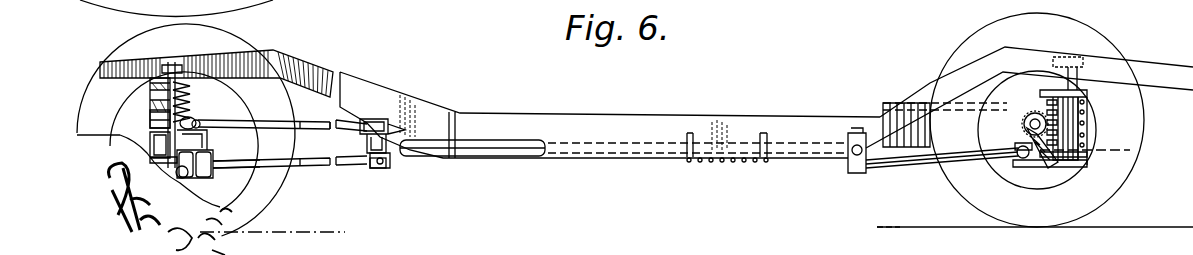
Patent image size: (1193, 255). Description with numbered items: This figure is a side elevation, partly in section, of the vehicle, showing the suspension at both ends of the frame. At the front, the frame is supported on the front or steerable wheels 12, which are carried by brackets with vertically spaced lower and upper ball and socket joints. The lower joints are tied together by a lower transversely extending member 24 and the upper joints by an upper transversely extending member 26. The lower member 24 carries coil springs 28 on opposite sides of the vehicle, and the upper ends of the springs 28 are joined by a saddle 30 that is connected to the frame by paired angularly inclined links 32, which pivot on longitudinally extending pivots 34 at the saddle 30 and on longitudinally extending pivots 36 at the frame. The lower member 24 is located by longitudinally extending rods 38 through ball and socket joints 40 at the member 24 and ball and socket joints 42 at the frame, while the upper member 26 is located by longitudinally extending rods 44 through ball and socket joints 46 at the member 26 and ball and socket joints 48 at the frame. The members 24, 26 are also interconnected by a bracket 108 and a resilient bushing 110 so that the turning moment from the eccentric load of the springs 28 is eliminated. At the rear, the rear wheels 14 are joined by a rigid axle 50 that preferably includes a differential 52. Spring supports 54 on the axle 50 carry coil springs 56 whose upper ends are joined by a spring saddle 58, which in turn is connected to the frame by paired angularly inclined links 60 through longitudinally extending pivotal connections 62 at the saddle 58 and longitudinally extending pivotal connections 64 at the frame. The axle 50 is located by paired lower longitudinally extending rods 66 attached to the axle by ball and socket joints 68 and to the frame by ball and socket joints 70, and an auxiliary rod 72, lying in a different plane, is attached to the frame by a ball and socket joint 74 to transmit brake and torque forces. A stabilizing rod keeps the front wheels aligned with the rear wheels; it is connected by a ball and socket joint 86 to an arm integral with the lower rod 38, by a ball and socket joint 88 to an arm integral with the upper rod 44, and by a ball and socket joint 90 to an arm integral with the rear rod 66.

The front or steerable wheels 12 is at (240, 47).
The rear wheels 14 is at (1080, 33).
The lower transversely extending member 24 is at (152, 143).
The upper transversely extending member 26 is at (193, 118).
The coil springs 28 is at (189, 100).
The saddle 30 is at (158, 64).
The angularly inclined links 32 is at (152, 106).
The longitudinally extending pivots 34 is at (178, 168).
The longitudinally extending pivots 36 is at (176, 70).
The longitudinally extending rods 38 is at (343, 168).
The ball and socket joints 40 is at (203, 183).
The ball and socket joints 42 is at (378, 170).
The longitudinally extending rods 44 is at (273, 114).
The ball and socket joints 46 is at (200, 123).
The ball and socket joints 48 is at (368, 142).
The rigid axle 50 is at (1022, 125).
The differential 52 is at (985, 134).
The spring supports 54 is at (1060, 167).
The coil springs 56 is at (1085, 124).
The spring saddle 58 is at (1053, 93).
The angularly inclined links 60 is at (1093, 89).
The longitudinally extending pivotal connections 62 is at (1133, 151).
The longitudinally extending pivotal connections 64 is at (1087, 58).
The lower longitudinally extending rods 66 is at (903, 167).
The ball and socket joints 68 is at (1025, 163).
The ball and socket joints 70 is at (622, 117).
The auxiliary rod 72 is at (967, 97).
The ball and socket joint 74 is at (890, 103).
The ball and socket joint 86 is at (391, 162).
The ball and socket joint 88 is at (375, 128).
The ball and socket joint 90 is at (858, 132).
The bracket 108 is at (240, 161).
The resilient bushing 110 is at (222, 170).